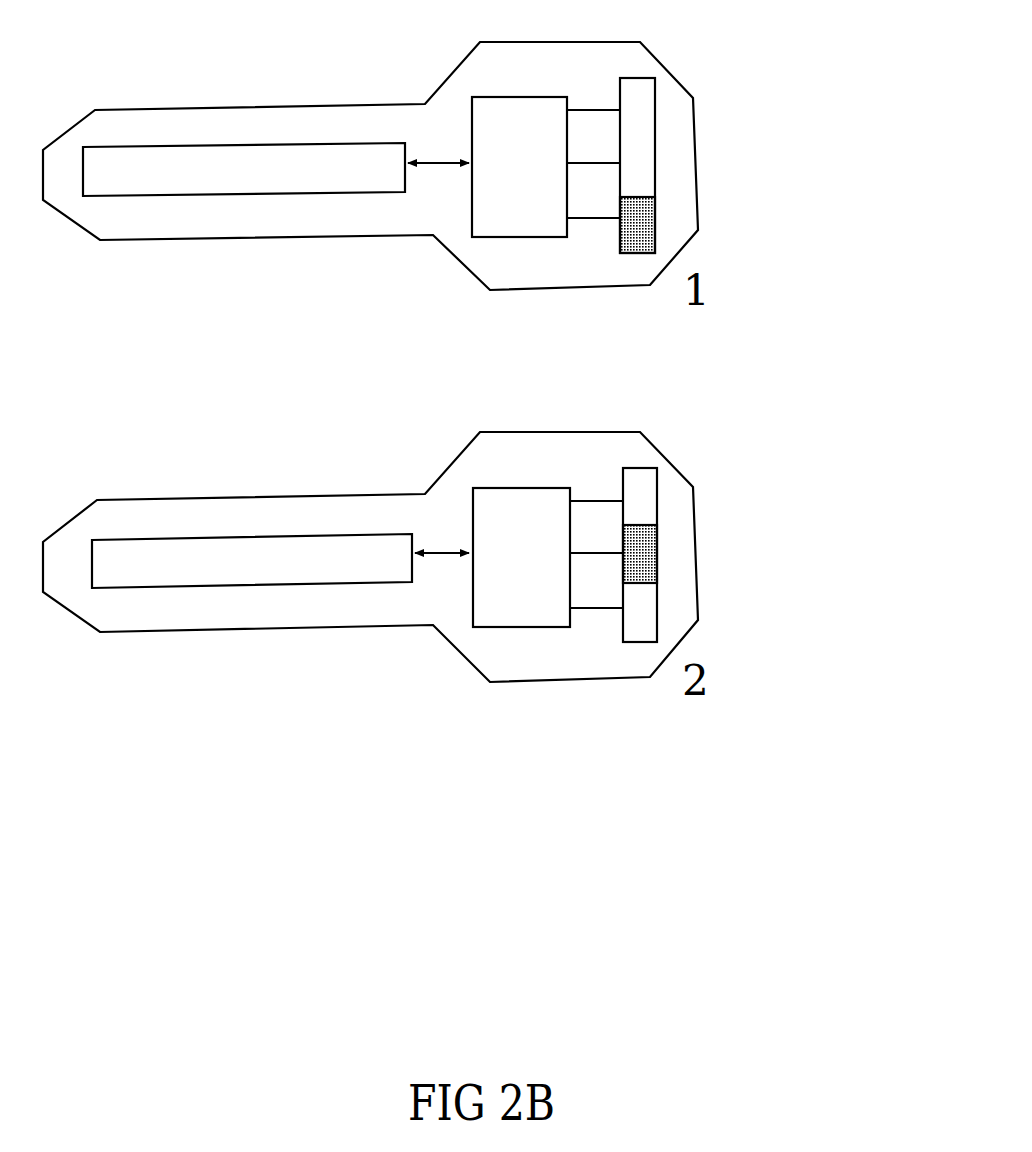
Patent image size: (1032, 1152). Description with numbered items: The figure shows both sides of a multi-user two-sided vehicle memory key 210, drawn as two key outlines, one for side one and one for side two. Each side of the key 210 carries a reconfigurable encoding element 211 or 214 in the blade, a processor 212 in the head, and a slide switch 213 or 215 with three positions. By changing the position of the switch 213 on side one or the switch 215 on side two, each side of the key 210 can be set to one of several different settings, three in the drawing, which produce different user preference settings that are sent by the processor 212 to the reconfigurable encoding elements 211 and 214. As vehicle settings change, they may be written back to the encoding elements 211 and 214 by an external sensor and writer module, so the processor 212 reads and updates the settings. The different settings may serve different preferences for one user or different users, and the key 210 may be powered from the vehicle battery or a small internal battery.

The key 210 is at (247, 108).
The reconfigurable encoding element 211 is at (110, 148).
The processor 212 is at (503, 97).
The switch 213 is at (657, 128).
The reconfigurable encoding element 214 is at (112, 538).
The switch 215 is at (657, 518).